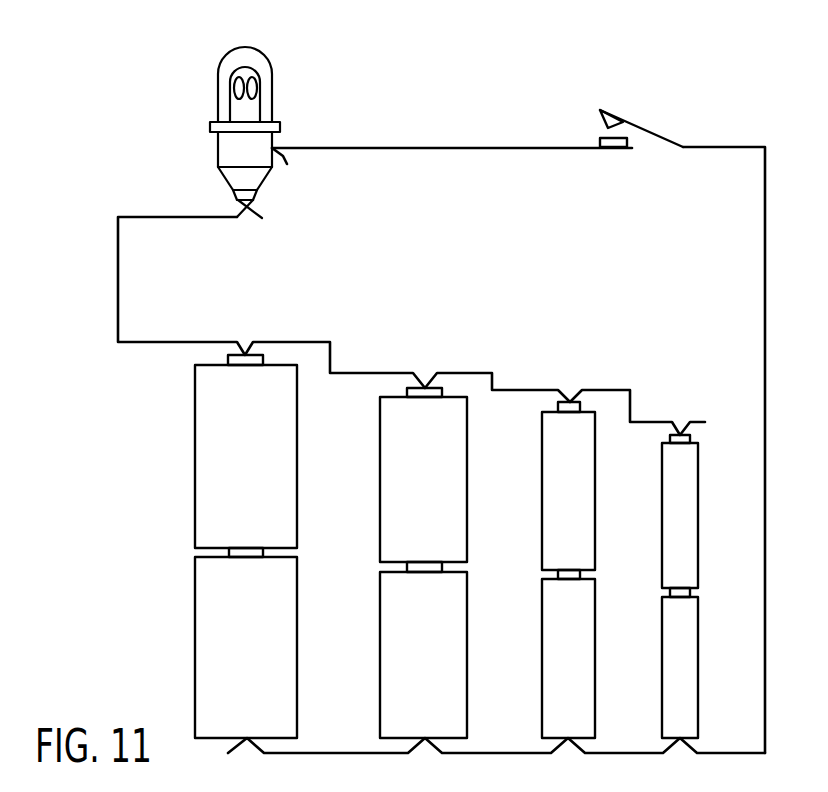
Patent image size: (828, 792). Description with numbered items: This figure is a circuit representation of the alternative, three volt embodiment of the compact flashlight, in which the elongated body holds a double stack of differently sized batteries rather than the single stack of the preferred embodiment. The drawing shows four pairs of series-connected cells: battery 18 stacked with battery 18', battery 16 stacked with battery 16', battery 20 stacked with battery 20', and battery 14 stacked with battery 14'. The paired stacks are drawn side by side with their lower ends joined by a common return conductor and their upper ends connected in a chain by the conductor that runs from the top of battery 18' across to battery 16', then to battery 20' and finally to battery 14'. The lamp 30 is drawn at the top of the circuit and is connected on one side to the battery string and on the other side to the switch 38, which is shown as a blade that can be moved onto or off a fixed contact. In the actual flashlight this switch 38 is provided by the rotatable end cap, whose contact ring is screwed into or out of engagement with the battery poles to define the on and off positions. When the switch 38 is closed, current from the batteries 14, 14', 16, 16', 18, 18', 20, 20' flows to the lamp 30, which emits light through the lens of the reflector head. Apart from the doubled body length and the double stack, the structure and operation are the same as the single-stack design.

The lamp 30 is at (272, 70).
The on/off switch 38 is at (645, 122).
The battery 18' is at (275, 451).
The battery 18 is at (273, 643).
The battery 16' is at (453, 475).
The battery 16 is at (451, 650).
The battery 20' is at (599, 486).
The battery 20 is at (596, 654).
The battery 14' is at (710, 511).
The battery 14 is at (707, 663).